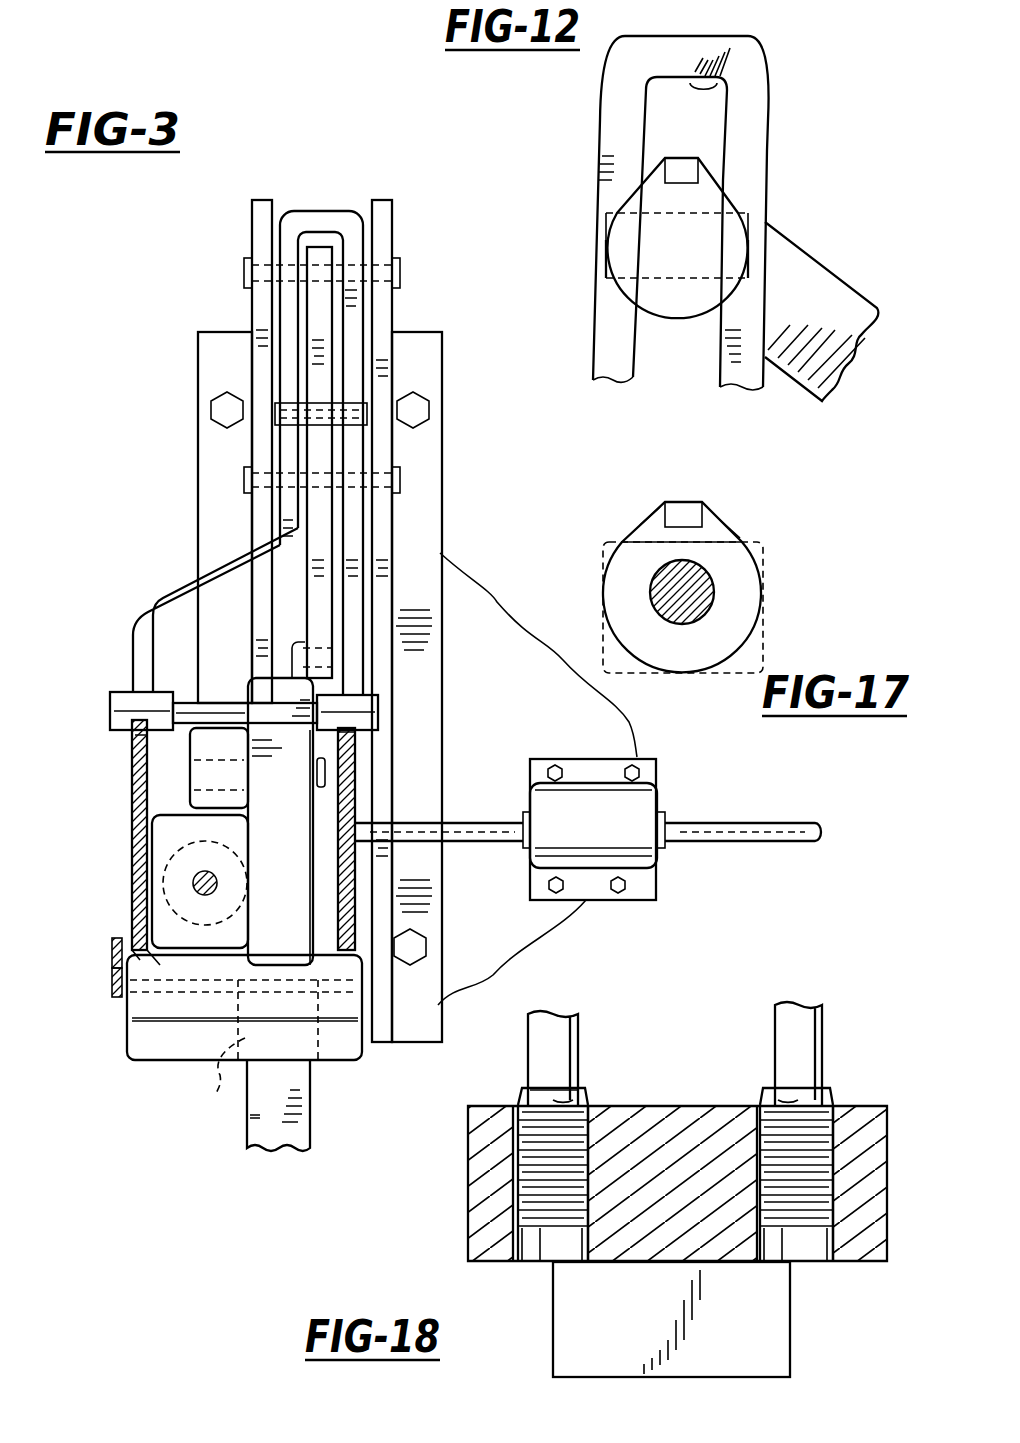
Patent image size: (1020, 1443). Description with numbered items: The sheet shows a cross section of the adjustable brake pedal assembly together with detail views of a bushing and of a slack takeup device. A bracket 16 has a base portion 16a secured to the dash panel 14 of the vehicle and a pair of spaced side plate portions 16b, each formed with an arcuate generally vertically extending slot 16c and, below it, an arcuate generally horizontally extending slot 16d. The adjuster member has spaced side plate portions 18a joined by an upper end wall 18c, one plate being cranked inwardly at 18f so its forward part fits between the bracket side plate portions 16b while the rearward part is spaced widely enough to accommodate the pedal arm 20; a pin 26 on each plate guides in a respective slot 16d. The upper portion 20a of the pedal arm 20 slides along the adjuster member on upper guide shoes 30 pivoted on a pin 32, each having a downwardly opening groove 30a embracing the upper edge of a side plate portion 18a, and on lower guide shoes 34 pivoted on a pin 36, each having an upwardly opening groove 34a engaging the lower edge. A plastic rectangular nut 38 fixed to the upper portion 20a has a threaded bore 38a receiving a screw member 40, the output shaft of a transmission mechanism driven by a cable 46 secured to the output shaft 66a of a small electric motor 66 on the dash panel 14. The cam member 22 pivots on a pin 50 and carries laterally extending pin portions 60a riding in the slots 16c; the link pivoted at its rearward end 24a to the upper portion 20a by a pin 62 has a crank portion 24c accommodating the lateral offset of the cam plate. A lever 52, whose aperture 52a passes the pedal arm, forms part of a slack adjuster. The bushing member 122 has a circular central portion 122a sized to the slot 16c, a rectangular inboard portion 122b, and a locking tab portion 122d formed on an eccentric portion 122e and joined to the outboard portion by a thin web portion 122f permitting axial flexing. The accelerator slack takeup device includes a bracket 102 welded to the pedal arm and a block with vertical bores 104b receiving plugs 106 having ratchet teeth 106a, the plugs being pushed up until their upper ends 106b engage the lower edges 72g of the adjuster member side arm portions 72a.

In FIG. 3, the dash panel 14 is at (562, 730).
In FIG. 12, the bracket 16 is at (770, 114).
In FIG. 3, the base portion 16a is at (198, 393).
In FIG. 3, the side plate portions 16b is at (252, 215).
In FIG. 12, the side plate portions 16b is at (605, 118).
In FIG. 3, the arcuate generally vertically extending slot 16c is at (265, 360).
In FIG. 12, the arcuate generally vertically extending slot 16c is at (714, 82).
In FIG. 3, the arcuate generally horizontally extending slot 16d is at (252, 457).
In FIG. 3, the side plate portions 18a is at (132, 796).
In FIG. 3, the upper end wall 18c is at (312, 211).
In FIG. 3, the cranked portion 18f is at (236, 548).
In FIG. 3, the pedal arm 20 is at (240, 1122).
In FIG. 3, the upper portion 20a is at (302, 926).
In FIG. 12, the cam member 22 is at (818, 258).
In FIG. 3, the rearward end 24a is at (190, 766).
In FIG. 3, the crank portion 24c is at (258, 668).
In FIG. 3, the pin 26 is at (244, 480).
In FIG. 3, the upper guide shoes 30 is at (113, 692).
In FIG. 3, the downwardly opening groove 30a is at (135, 738).
In FIG. 3, the pin 32 is at (208, 712).
In FIG. 3, the lower guide shoes 34 is at (112, 952).
In FIG. 3, the upwardly opening groove 34a is at (140, 944).
In FIG. 3, the pin 36 is at (110, 985).
In FIG. 3, the nut 38 is at (152, 870).
In FIG. 3, the threaded central axial bore 38a is at (172, 866).
In FIG. 3, the screw member 40 is at (208, 896).
In FIG. 3, the drive cable 46 is at (476, 845).
In FIG. 3, the pin 50 is at (275, 412).
In FIG. 3, the lever 52 is at (127, 1051).
In FIG. 3, the aperture 52a is at (206, 1078).
In FIG. 3, the pin portions 60a is at (244, 273).
In FIG. 3, the pin 62 is at (325, 777).
In FIG. 3, the electric motor 66 is at (627, 760).
In FIG. 3, the output shaft 66a is at (665, 813).
In FIG. 18, the side arm portions 72a is at (570, 1042).
In FIG. 18, the lower edges 72g is at (580, 1098).
In FIG. 18, the bracket 102 is at (562, 1323).
In FIG. 18, the vertical bores 104b is at (468, 1162).
In FIG. 18, the plugs 106 is at (540, 1262).
In FIG. 18, the ratchet teeth 106a is at (522, 1208).
In FIG. 18, the upper ends 106b is at (526, 1090).
In FIG. 17, the first bushing member 122 is at (732, 525).
In FIG. 17, the central portion 122a is at (662, 582).
In FIG. 17, the inboard portion 122b is at (763, 556).
In FIG. 17, the locking tab portion 122d is at (689, 502).
In FIG. 17, the eccentric portion 122e is at (645, 532).
In FIG. 17, the thin web portion 122f is at (718, 533).